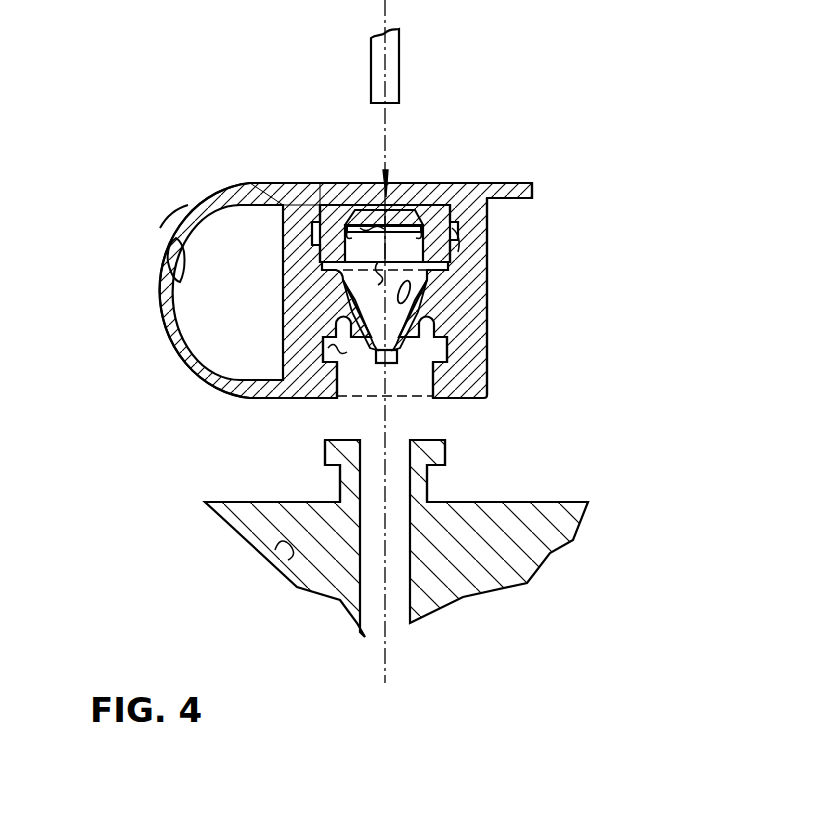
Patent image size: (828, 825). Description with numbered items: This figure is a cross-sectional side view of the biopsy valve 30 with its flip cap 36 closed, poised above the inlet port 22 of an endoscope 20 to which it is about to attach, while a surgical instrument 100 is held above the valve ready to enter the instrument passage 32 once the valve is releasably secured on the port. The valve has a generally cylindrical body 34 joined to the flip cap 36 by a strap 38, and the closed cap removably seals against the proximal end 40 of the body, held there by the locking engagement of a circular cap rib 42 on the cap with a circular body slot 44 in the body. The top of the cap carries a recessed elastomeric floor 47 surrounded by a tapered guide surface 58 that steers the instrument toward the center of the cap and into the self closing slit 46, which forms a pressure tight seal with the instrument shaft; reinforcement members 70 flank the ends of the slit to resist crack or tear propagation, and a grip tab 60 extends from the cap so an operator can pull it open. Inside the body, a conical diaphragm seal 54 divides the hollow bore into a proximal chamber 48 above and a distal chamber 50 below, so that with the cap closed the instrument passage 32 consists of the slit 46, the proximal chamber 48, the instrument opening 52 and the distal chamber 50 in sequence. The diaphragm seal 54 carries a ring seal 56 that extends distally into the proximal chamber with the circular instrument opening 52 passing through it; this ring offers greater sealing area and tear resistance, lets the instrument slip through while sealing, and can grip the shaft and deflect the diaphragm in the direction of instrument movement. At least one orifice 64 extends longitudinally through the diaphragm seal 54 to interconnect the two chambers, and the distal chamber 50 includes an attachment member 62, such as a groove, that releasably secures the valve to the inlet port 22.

The endoscope 20 is at (278, 548).
The inlet port 22 is at (431, 485).
The biopsy valve 30 is at (585, 281).
The instrument passage 32 is at (387, 184).
The body 34 is at (492, 377).
The flip cap 36 is at (519, 183).
The strap 38 is at (152, 290).
The proximal end 40 is at (298, 183).
The cap rib 42 is at (456, 254).
The body slot 44 is at (327, 196).
The self closing slit 46 is at (395, 200).
The elastomeric floor 47 is at (378, 182).
The proximal chamber 48 is at (415, 200).
The distal chamber 50 is at (332, 343).
The instrument opening 52 is at (388, 365).
The conical diaphragm seal 54 is at (416, 365).
The ring seal 56 is at (352, 360).
The tapered guide surface 58 is at (355, 200).
The grip tab 60 is at (533, 190).
The attachment member 62 is at (430, 372).
The orifice 64 is at (348, 326).
The reinforcement member 70 is at (376, 269).
The surgical instrument 100 is at (400, 63).